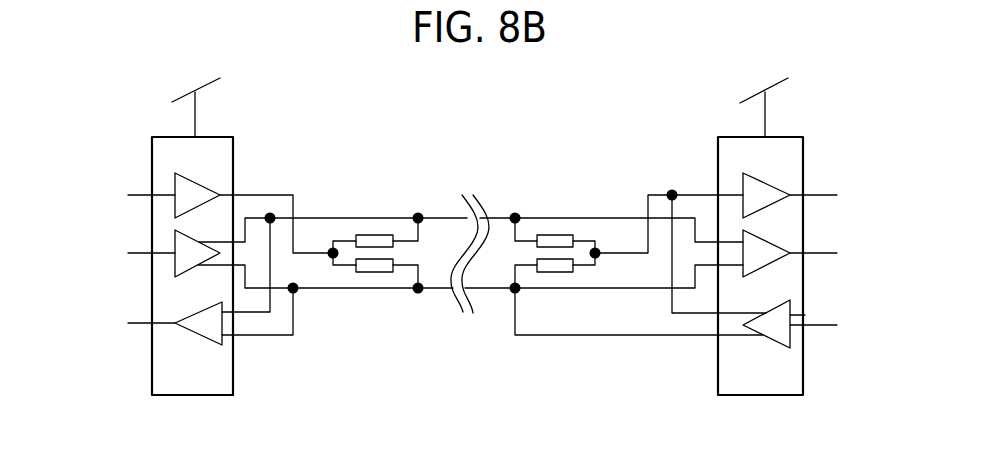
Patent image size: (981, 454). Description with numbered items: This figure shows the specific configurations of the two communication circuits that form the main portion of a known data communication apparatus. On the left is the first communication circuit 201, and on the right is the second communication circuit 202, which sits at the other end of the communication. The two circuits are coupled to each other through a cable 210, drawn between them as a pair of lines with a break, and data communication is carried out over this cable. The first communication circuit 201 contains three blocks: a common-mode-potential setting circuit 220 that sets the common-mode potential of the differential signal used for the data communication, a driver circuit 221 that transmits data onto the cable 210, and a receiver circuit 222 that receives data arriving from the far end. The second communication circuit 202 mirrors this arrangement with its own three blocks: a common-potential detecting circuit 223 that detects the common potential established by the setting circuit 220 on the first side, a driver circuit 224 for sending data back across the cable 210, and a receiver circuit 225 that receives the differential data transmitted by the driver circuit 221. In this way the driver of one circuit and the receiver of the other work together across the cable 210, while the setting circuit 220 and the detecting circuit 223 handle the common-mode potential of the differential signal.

The first communication circuit 201 is at (152, 362).
The second communication circuit 202 is at (718, 372).
The cable 210 is at (472, 323).
The common-mode-potential setting circuit 220 is at (185, 178).
The driver circuit 221 is at (185, 235).
The receiver circuit 222 is at (196, 334).
The common-potential detecting circuit 223 is at (768, 181).
The driver circuit 224 is at (805, 313).
The receiver circuit 225 is at (768, 240).